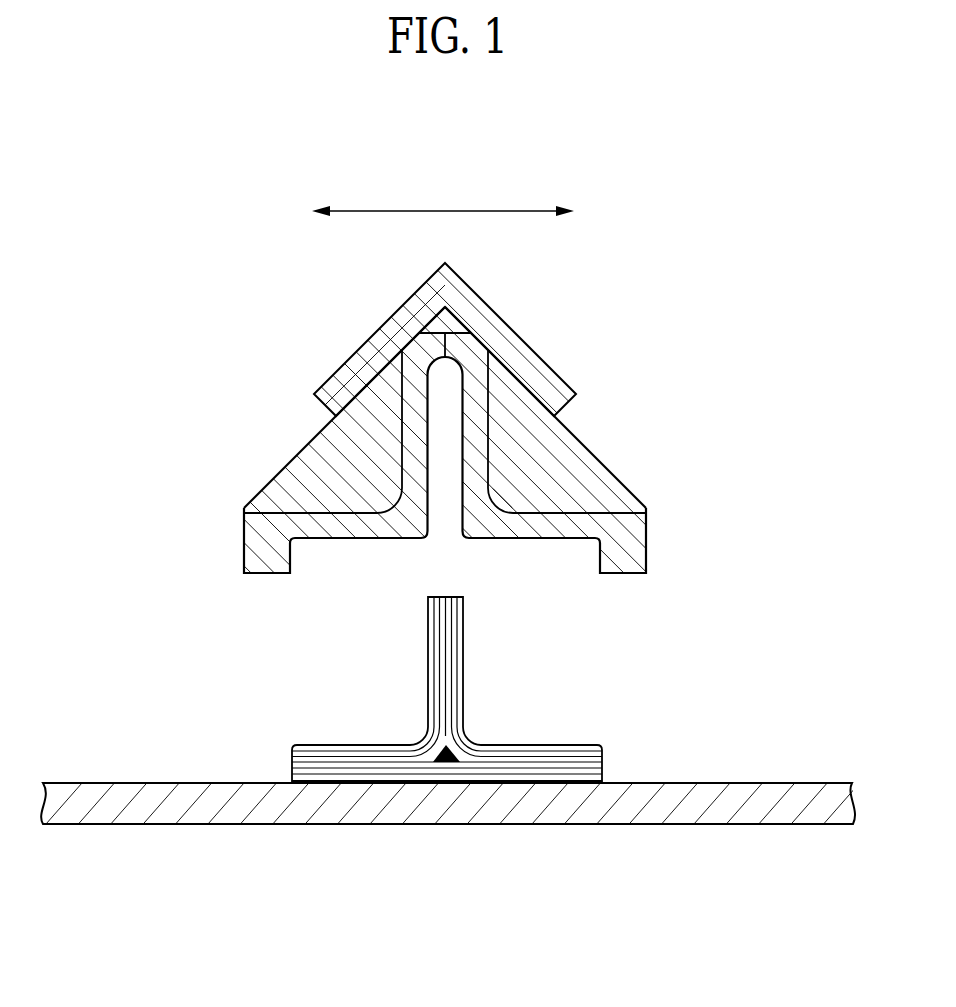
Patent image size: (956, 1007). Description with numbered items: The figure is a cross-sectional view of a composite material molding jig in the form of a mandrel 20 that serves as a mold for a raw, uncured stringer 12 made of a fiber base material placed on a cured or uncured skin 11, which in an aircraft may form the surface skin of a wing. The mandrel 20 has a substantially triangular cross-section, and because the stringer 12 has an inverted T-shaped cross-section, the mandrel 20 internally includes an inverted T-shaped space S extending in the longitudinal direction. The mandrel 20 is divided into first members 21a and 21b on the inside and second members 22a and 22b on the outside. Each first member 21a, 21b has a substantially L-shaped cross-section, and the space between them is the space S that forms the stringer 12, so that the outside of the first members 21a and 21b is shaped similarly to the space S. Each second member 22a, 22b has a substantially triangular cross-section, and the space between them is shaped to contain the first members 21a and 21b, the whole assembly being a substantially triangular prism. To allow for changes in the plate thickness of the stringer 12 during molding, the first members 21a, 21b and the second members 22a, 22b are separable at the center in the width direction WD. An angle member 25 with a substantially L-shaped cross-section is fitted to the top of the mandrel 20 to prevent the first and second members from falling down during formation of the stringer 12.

The skin 11 is at (533, 815).
The stringer 12 is at (427, 773).
The mandrel 20 is at (478, 425).
The first member 21a is at (267, 552).
The first member 21b is at (630, 547).
The second member 22a is at (307, 472).
The second member 22b is at (590, 477).
The angle member 25 is at (537, 375).
The space S is at (462, 549).
The width direction WD is at (453, 211).